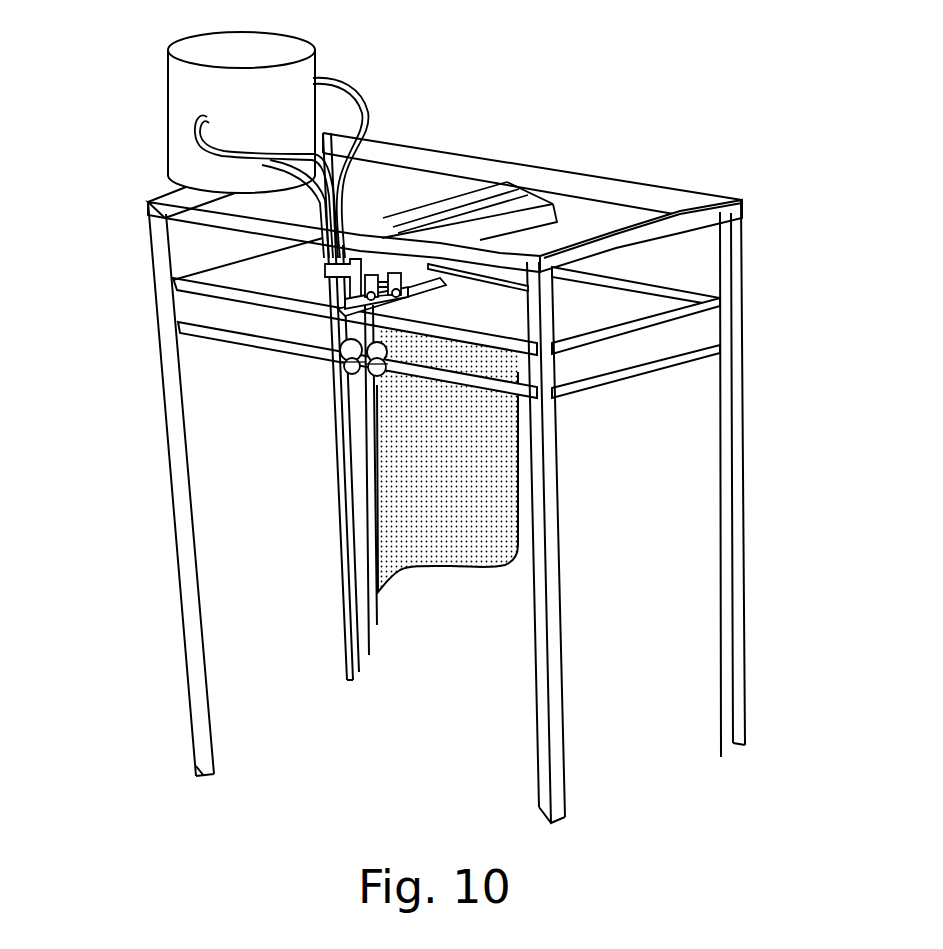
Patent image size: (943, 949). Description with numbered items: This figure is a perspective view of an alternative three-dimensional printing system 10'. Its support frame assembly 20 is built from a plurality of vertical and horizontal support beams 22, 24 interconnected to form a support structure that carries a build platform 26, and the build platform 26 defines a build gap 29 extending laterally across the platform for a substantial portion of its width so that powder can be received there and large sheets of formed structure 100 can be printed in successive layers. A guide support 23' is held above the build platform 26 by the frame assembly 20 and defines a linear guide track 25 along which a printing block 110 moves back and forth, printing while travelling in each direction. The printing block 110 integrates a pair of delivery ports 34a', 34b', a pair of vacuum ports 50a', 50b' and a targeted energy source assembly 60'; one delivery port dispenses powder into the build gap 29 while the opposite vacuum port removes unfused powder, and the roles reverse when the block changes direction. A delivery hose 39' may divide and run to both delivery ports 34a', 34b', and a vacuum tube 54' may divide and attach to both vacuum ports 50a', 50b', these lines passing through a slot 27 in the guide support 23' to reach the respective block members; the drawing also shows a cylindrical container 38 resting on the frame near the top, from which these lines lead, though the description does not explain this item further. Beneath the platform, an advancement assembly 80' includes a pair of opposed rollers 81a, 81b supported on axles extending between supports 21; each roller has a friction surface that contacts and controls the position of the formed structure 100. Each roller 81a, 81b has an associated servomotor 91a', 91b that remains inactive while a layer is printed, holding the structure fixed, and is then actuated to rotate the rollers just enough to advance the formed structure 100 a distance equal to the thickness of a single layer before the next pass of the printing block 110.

The 3D printing system 10' is at (723, 106).
The support frame assembly 20 is at (766, 331).
The supports 21 is at (698, 348).
The vertical support beams 22 is at (202, 742).
The guide support 23' is at (555, 192).
The horizontal support beams 24 is at (157, 192).
The guide track 25 is at (323, 263).
The build platform 26 is at (598, 328).
The slot 27 is at (514, 184).
The build gap 29 is at (477, 283).
The first delivery port 34a' is at (315, 290).
The second delivery port 34b' is at (423, 293).
The reservoir 38 is at (177, 82).
The delivery hose 39' is at (367, 160).
The first vacuum port 50a' is at (327, 294).
The second vacuum port 50b' is at (456, 260).
The vacuum tube 54' is at (225, 186).
The energy source assembly 60' is at (400, 294).
The advancement assembly 80' is at (308, 480).
The first roller 81a is at (343, 373).
The second roller 81b is at (392, 390).
The servomotor 91a' is at (297, 357).
The servomotor 91b is at (390, 360).
The formed structure 100 is at (455, 560).
The printing block 110 is at (302, 316).